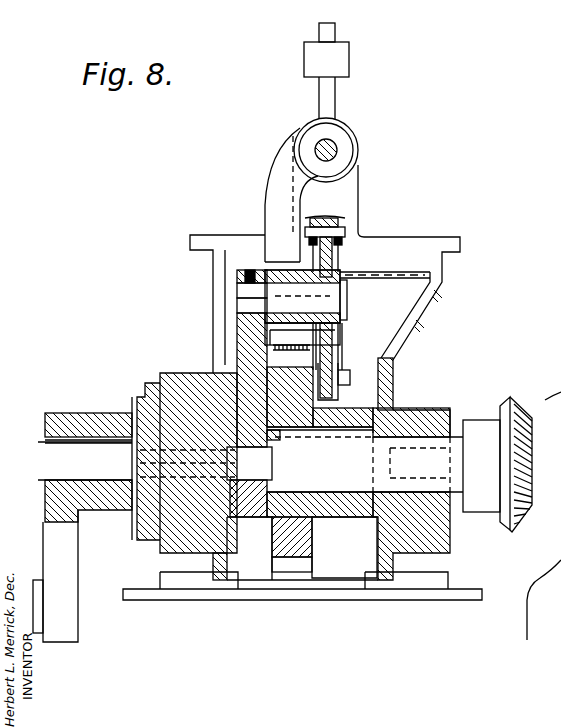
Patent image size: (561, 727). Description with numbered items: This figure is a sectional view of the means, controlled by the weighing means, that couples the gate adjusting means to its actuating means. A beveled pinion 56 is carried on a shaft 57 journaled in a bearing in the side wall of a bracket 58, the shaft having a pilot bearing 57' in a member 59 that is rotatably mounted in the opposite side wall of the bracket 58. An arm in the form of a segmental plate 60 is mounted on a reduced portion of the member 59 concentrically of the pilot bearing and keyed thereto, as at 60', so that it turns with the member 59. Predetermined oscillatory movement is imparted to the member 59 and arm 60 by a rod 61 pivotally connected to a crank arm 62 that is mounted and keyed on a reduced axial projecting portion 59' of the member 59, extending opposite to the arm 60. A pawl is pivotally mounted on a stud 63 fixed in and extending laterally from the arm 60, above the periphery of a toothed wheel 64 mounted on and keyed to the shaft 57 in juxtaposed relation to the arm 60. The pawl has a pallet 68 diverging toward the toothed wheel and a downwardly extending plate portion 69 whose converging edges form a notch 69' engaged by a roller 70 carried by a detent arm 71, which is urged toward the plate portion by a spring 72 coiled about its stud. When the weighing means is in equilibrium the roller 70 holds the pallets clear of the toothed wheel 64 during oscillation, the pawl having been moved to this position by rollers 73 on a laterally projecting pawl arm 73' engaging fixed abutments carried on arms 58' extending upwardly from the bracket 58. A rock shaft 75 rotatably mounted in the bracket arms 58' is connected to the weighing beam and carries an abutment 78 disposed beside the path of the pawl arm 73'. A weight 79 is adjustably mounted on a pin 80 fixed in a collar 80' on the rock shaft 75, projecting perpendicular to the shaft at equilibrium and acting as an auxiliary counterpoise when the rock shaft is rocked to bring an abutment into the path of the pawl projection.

The beveled pinion 56 is at (512, 405).
The shaft 57 is at (433, 488).
The pilot bearing 57' is at (249, 513).
The bracket 58 is at (294, 461).
The bracket arms 58' is at (364, 198).
The member 59 is at (127, 477).
The reduced axial projecting portion 59' is at (70, 467).
The segmental plate arm 60 is at (274, 393).
The key 60' is at (320, 459).
The rod 61 is at (45, 555).
The crank arm 62 is at (72, 605).
The stud 63 is at (347, 300).
The toothed wheel 64 is at (316, 540).
The pawl pallet 68 is at (330, 335).
The plate portion 69 is at (330, 346).
The notch 69' is at (355, 360).
The roller 70 is at (340, 402).
The detent arm 71 is at (388, 345).
The spring 72 is at (295, 340).
The rollers 73 is at (354, 241).
The pawl arm 73' is at (383, 263).
The rock shaft 75 is at (337, 147).
The abutment 78 is at (278, 238).
The weight 79 is at (345, 62).
The pin 80 is at (360, 98).
The collar 80' is at (356, 150).